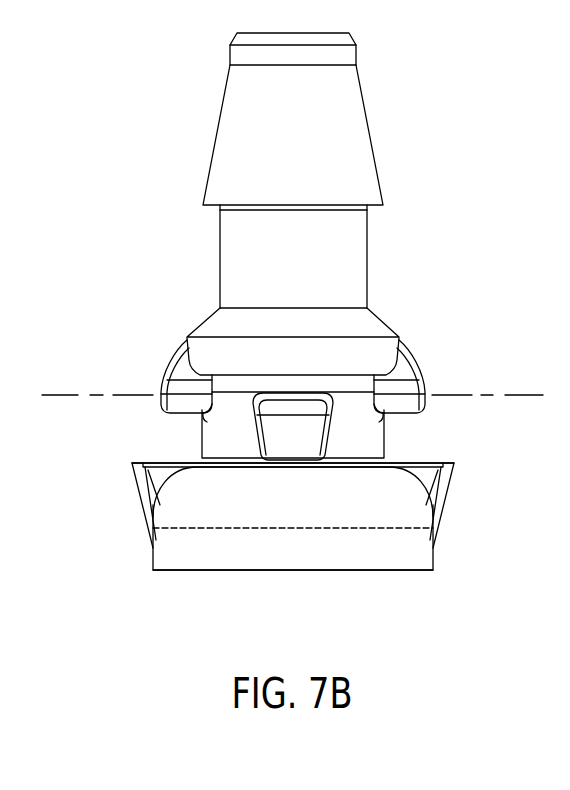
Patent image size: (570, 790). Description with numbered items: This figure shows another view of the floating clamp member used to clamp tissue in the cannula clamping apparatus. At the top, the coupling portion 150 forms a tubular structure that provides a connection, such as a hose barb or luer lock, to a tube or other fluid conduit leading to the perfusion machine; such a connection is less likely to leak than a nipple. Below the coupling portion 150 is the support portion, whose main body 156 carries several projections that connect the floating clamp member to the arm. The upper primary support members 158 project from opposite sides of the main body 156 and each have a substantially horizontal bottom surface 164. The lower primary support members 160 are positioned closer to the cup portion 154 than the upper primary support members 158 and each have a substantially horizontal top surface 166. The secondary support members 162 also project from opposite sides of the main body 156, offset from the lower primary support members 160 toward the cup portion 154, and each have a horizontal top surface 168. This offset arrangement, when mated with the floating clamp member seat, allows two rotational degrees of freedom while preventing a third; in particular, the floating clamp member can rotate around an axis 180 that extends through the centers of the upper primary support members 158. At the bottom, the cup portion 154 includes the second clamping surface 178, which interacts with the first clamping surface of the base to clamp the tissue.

The coupling portion 150 is at (220, 117).
The horizontal top surfaces 166 is at (286, 400).
The main body 156 is at (340, 439).
The upper primary support members 158 is at (168, 378).
The horizontal bottom surface 164 is at (183, 414).
The lower primary support members 160 is at (274, 439).
The secondary support members 162 is at (137, 482).
The horizontal top surfaces 168 is at (160, 462).
The cup portion 154 is at (276, 514).
The second clamping surface 178 is at (323, 570).
The axis 180 is at (75, 393).